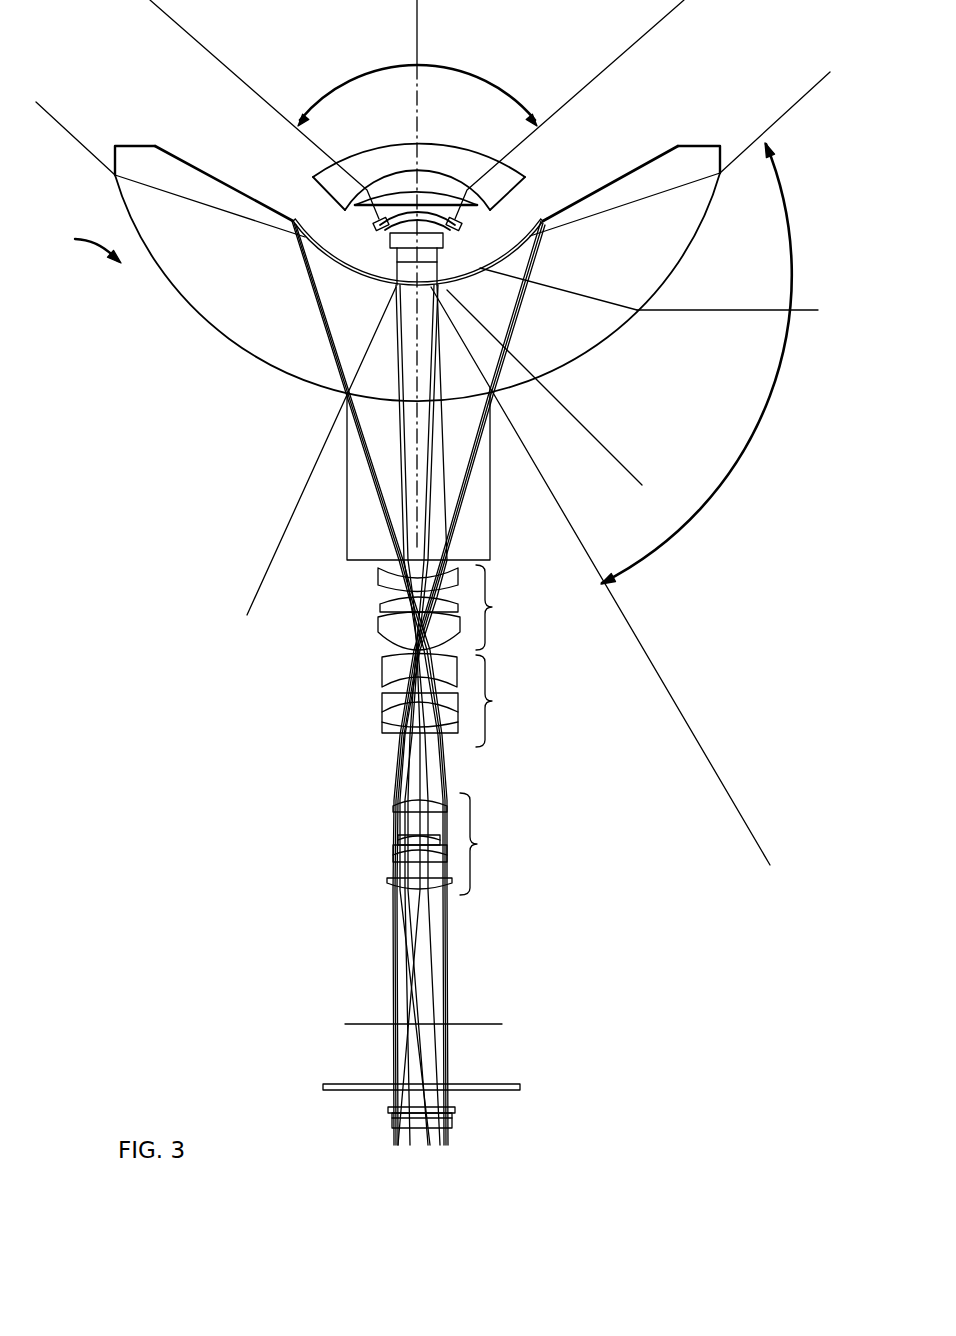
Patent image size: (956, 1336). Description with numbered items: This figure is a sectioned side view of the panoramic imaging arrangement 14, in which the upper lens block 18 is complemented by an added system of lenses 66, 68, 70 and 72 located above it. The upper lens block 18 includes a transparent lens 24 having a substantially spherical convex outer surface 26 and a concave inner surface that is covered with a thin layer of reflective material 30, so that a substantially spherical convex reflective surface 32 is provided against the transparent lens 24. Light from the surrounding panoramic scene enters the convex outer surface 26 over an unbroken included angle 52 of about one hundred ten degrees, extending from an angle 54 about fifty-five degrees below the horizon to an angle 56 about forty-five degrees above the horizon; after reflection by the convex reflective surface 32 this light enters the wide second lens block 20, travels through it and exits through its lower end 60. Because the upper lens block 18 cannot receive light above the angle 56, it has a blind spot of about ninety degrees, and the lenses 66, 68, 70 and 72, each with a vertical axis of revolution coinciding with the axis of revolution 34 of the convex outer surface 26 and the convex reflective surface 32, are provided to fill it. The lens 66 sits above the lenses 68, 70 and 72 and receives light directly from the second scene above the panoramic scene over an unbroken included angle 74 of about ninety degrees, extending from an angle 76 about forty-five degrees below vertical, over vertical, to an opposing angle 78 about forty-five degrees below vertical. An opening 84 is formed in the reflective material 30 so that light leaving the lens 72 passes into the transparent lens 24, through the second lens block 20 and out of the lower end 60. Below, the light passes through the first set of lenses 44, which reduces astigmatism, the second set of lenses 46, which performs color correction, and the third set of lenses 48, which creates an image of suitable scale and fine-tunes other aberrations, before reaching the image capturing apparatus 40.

The panoramic imaging arrangement 14 is at (79, 247).
The first, upper lens block 18 is at (433, 273).
The second, lower lens block 20 is at (491, 524).
The transparent lens 24 is at (604, 279).
The convex outer surface 26 is at (679, 265).
The reflective material 30 is at (332, 260).
The convex reflective surface 32 is at (544, 218).
The axis of revolution 34 is at (418, 120).
The image capturing apparatus 40 is at (392, 1120).
The first set of lenses 44 is at (450, 607).
The second set of lenses 46 is at (452, 701).
The third set of lenses 48 is at (447, 844).
The included angle 52 is at (769, 402).
The angle below the horizon 54 is at (652, 663).
The angle above the horizon 56 is at (798, 103).
The lower end 60 is at (420, 728).
The lens 66 is at (508, 174).
The lens 68 is at (478, 208).
The lens 70 is at (455, 228).
The lens 72 is at (432, 249).
The included angle 74 is at (457, 69).
The angle below vertical 76 is at (656, 26).
The angle below vertical 78 is at (195, 40).
The opening 84 is at (396, 280).